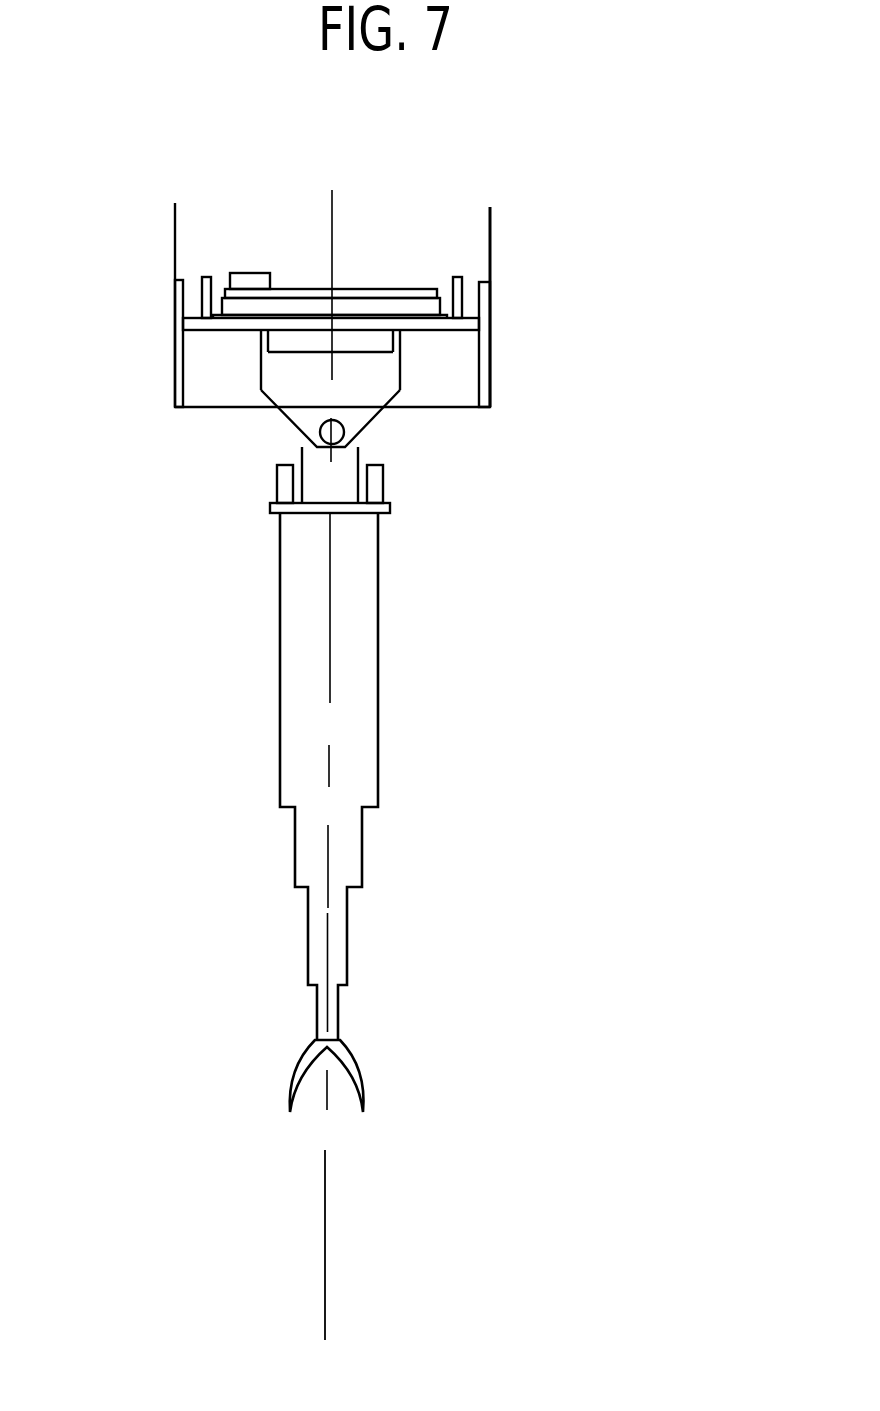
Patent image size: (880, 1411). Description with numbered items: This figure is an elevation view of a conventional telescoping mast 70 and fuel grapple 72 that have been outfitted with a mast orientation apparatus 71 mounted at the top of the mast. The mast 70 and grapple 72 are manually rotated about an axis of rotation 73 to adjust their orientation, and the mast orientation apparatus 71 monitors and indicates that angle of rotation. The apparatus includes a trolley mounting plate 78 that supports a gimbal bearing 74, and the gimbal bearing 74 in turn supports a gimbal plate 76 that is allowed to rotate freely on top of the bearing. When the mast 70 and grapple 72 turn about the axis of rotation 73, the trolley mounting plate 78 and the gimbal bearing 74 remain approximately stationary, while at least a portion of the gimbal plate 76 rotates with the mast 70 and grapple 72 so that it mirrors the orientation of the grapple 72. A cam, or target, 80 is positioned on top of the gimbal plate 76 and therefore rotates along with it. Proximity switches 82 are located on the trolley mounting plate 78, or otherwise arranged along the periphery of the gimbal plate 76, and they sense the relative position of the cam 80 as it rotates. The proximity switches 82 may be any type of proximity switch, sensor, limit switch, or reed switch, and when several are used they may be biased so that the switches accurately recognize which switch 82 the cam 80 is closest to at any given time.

The telescoping mast 70 is at (378, 773).
The mast orientation apparatus 71 is at (732, 145).
The fuel grapple 72 is at (288, 1077).
The axis of rotation 73 is at (325, 1210).
The gimbal bearing 74 is at (387, 308).
The gimbal plate 76 is at (420, 290).
The trolley mounting plate 78 is at (473, 316).
The cam 80 is at (248, 273).
The proximity switches 82 is at (202, 298).